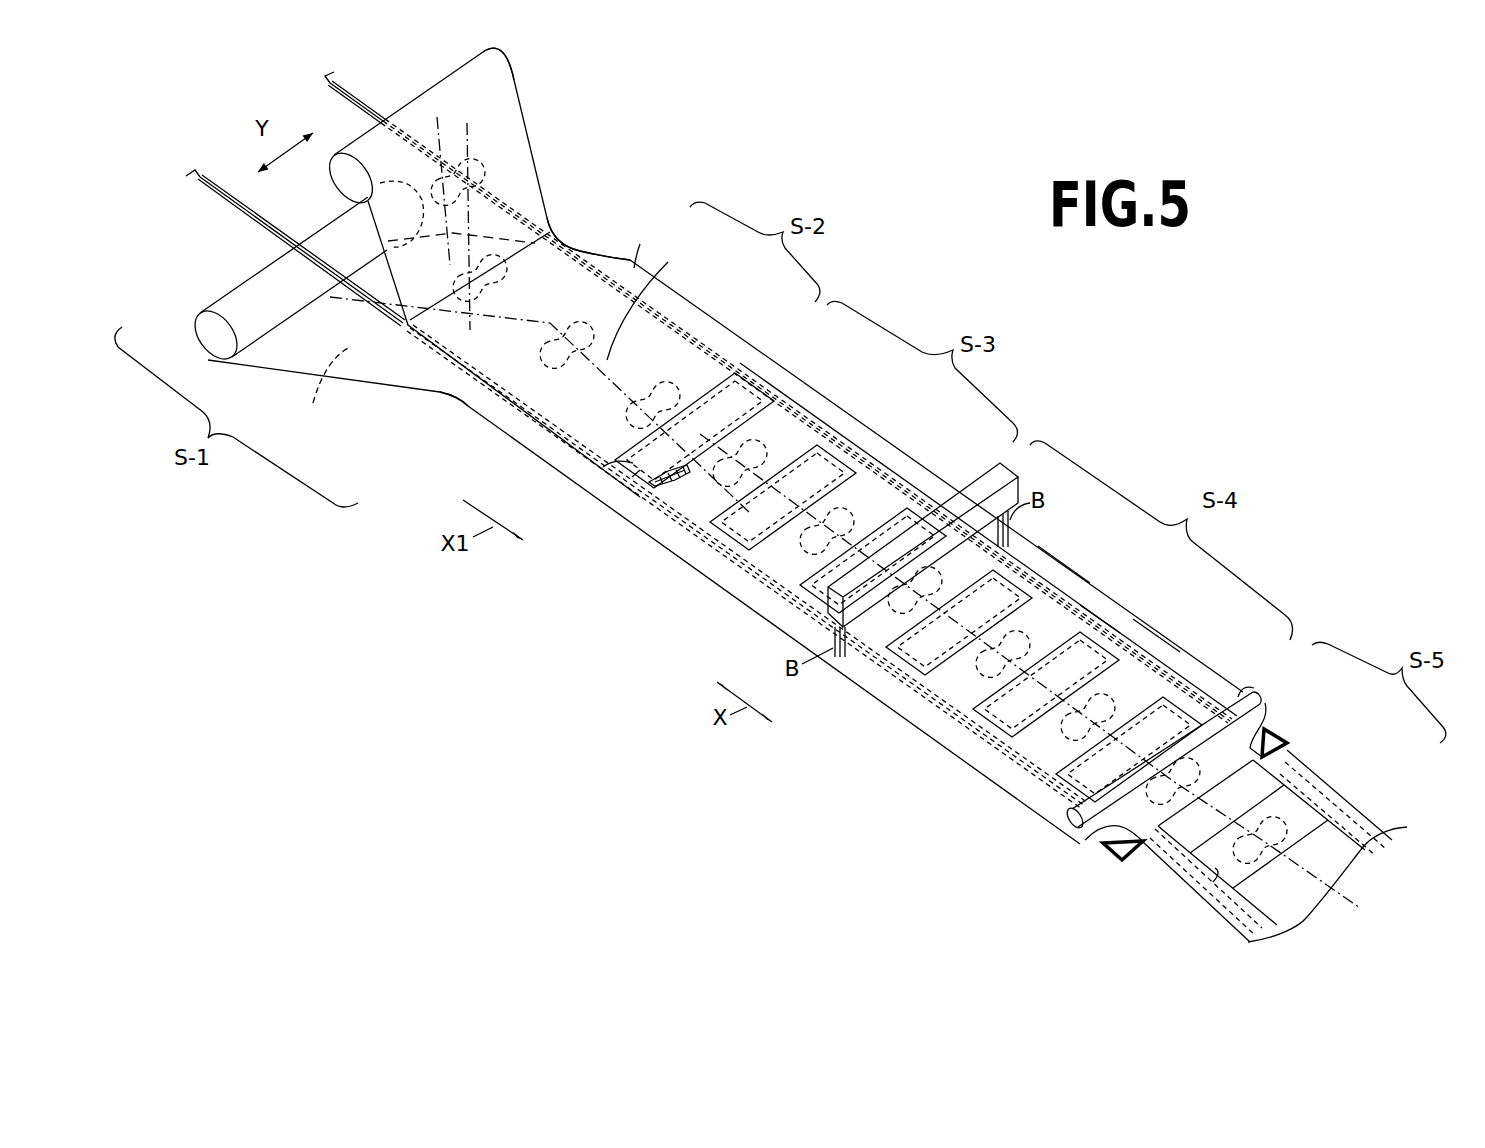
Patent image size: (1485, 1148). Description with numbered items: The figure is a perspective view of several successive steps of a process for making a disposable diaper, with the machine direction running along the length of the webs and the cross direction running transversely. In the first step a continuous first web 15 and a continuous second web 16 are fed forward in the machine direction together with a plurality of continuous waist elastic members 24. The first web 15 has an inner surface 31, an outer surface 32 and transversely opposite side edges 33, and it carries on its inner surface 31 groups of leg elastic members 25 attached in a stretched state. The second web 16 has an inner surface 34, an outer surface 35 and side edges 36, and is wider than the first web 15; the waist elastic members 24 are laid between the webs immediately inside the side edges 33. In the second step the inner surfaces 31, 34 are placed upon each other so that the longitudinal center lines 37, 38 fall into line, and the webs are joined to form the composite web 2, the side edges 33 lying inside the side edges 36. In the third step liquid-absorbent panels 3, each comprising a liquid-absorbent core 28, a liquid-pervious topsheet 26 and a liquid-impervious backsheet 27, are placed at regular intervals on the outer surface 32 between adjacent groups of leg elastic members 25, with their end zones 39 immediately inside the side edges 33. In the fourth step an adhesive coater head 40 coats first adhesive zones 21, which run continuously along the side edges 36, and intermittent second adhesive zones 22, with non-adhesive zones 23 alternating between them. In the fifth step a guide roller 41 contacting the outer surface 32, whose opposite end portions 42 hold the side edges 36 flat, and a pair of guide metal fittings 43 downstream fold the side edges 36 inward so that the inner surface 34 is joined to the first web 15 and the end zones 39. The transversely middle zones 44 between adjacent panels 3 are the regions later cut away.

The composite web 2 is at (672, 337).
The liquid-absorbent panel 3 is at (752, 360).
The first web 15 is at (510, 167).
The second web 16 is at (287, 333).
The first adhesive zone 21 is at (1132, 615).
The second adhesive zone 22 is at (1078, 593).
The non-adhesive zone 23 is at (1038, 557).
The waist elastic member 24 is at (360, 98).
The leg elastic member 25 is at (463, 150).
The topsheet 26 is at (608, 480).
The backsheet 27 is at (632, 477).
The liquid-absorbent core 28 is at (680, 486).
The inner surface of first web 31 is at (508, 140).
The outer surface of first web 32 is at (552, 220).
The side edge of first web 33 is at (543, 192).
The inner surface of second web 34 is at (1115, 620).
The outer surface of second web 35 is at (317, 385).
The side edge of second web 36 is at (390, 387).
The longitudinal center line of first web 37 is at (650, 303).
The longitudinal center line of second web 38 is at (350, 300).
The end zone of panel 39 is at (770, 387).
The adhesive coater head 40 is at (1012, 474).
The guide roller 41 is at (1238, 696).
The end portion of guide roller 42 is at (1242, 708).
The guide metal fitting 43 is at (1268, 733).
The transversely middle zone 44 is at (1290, 832).